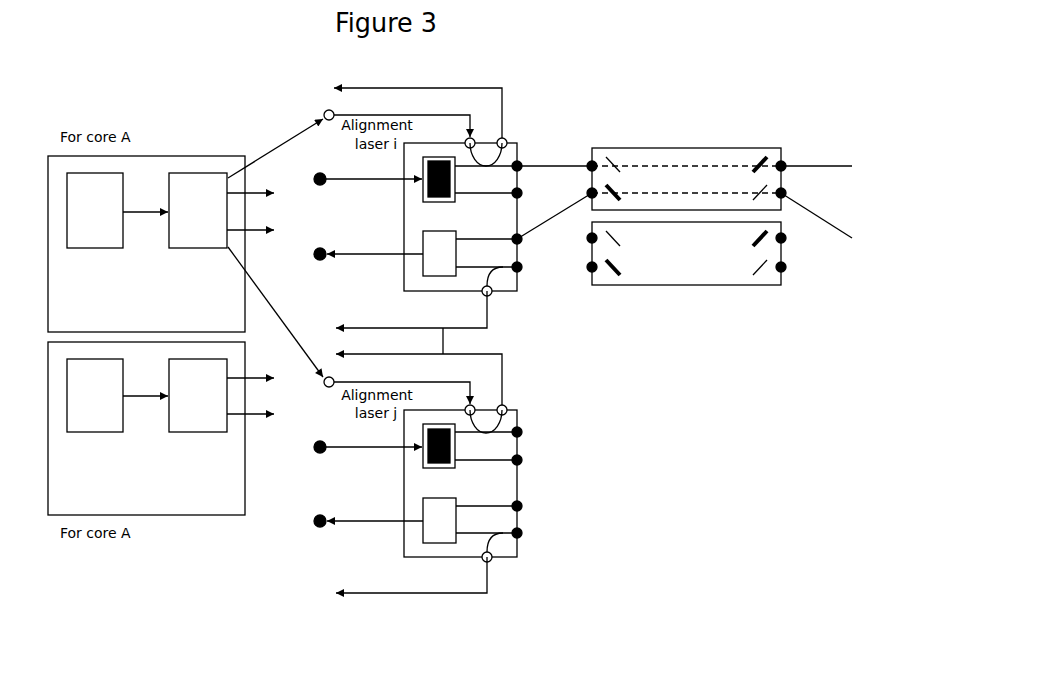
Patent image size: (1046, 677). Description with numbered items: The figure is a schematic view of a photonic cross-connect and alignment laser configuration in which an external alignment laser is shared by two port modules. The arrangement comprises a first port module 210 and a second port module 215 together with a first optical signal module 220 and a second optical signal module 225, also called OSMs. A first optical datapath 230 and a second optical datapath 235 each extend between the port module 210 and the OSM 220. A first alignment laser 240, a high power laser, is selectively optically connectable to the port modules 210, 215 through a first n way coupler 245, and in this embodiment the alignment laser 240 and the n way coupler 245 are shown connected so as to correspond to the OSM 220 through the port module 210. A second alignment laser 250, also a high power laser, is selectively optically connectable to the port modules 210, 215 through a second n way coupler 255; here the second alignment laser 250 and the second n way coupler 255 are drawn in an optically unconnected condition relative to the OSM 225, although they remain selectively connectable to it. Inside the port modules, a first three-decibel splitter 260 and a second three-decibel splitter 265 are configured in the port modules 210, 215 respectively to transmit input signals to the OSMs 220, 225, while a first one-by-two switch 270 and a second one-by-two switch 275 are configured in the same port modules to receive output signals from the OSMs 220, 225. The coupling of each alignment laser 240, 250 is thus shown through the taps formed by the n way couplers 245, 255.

The first port module 210 is at (440, 189).
The second port module 215 is at (440, 455).
The first optical signal module 220 is at (647, 148).
The second optical signal module 225 is at (677, 285).
The first optical datapath 230 is at (548, 161).
The second optical datapath 235 is at (538, 232).
The first alignment laser 240 is at (95, 243).
The first n way coupler 245 is at (198, 233).
The second alignment laser 250 is at (95, 428).
The second n way coupler 255 is at (198, 418).
The first 3-dB splitter 260 is at (423, 197).
The second 3-dB splitter 265 is at (423, 461).
The first 1×2 switch 270 is at (423, 265).
The second 1×2 switch 275 is at (423, 531).